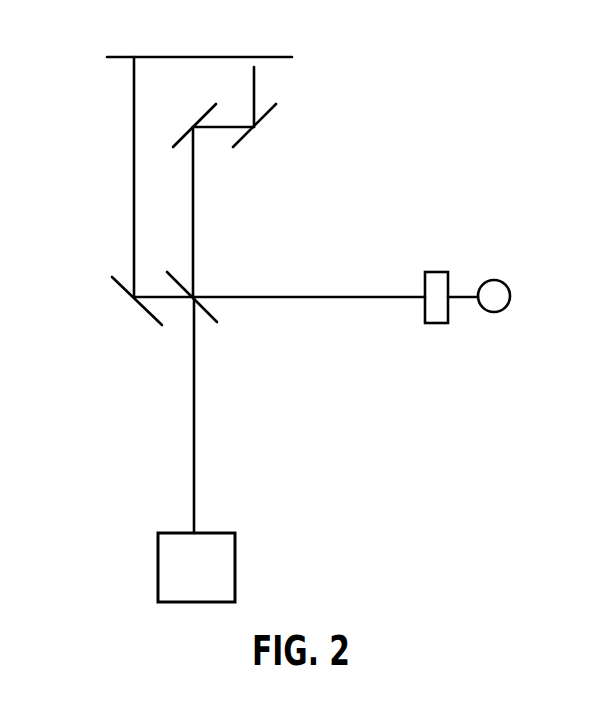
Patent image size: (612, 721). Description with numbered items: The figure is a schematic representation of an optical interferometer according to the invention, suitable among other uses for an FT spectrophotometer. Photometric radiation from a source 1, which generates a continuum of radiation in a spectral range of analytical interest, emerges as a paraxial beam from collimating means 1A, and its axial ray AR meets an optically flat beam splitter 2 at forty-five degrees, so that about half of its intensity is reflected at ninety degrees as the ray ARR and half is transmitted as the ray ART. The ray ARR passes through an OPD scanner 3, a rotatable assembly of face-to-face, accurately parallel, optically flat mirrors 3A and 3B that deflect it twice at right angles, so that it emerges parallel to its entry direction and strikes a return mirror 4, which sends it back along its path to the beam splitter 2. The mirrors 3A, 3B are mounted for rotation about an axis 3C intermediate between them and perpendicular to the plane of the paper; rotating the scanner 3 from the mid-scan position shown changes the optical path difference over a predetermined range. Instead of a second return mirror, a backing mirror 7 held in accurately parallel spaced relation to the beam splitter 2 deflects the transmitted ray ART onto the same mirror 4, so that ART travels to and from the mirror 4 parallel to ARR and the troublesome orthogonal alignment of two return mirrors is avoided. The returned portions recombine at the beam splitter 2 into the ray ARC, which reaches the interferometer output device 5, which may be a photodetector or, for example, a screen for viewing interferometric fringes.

The source 1 is at (509, 285).
The collimating means 1A is at (423, 305).
The beam splitter 2 is at (210, 310).
The OPD scanner 3 is at (279, 140).
The mirror 3A is at (196, 121).
The mirror 3B is at (265, 120).
The axis 3C is at (223, 127).
The return mirror 4 is at (150, 57).
The interferometer output device 5 is at (207, 532).
The backing mirror 7 is at (112, 285).
The axial ray AR is at (325, 297).
The axial ray transmitted ART is at (134, 173).
The axial ray reflected ARR is at (193, 215).
The recombined ray ARC is at (194, 433).